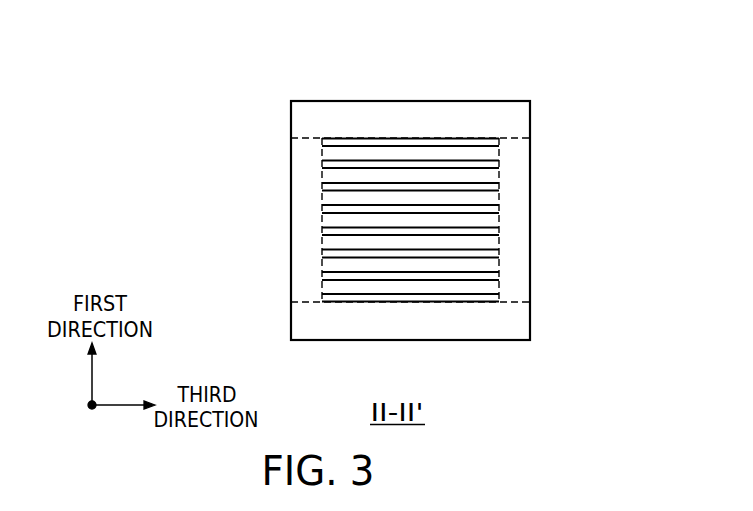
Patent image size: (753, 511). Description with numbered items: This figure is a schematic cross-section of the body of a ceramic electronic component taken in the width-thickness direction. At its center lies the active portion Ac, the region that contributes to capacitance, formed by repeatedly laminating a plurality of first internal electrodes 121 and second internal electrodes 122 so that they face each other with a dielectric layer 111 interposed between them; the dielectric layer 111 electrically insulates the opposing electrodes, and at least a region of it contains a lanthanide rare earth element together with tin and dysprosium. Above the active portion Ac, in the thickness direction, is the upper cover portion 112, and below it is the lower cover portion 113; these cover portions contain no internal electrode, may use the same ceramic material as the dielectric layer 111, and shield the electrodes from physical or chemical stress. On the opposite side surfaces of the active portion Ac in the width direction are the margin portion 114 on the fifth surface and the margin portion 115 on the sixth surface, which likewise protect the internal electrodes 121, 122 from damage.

The upper cover portion 112 is at (418, 117).
The first internal electrode 121 is at (498, 140).
The dielectric layer 111 is at (494, 151).
The second internal electrode 122 is at (498, 162).
The active portion Ac is at (322, 222).
The margin portion 114 is at (306, 257).
The margin portion 115 is at (523, 244).
The lower cover portion 113 is at (523, 319).